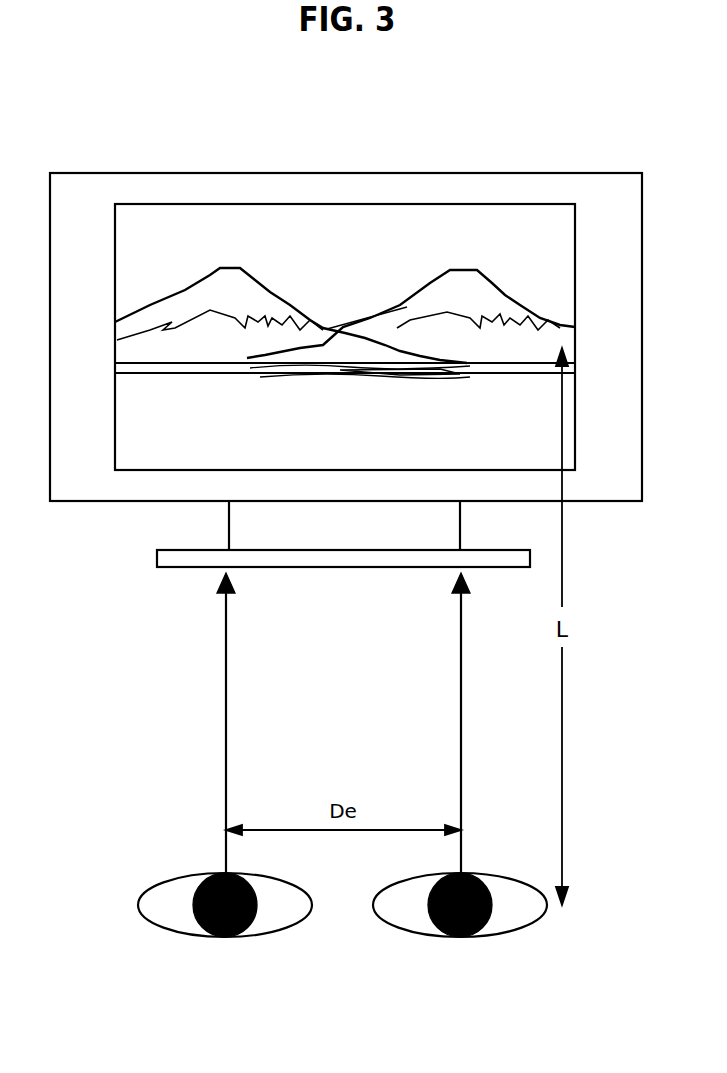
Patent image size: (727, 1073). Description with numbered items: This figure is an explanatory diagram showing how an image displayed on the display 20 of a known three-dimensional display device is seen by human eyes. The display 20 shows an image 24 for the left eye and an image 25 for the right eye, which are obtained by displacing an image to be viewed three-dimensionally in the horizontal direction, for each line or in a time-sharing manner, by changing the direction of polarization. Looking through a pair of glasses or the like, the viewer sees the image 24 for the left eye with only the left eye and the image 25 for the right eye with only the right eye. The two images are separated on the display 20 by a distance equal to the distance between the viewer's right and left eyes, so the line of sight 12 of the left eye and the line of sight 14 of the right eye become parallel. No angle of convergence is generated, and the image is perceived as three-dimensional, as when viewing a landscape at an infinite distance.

The display 20 is at (427, 172).
The image for the left eye 24 is at (260, 282).
The image for the right eye 25 is at (495, 283).
The left eye of viewer 12 is at (225, 755).
The right eye of viewer 14 is at (460, 755).